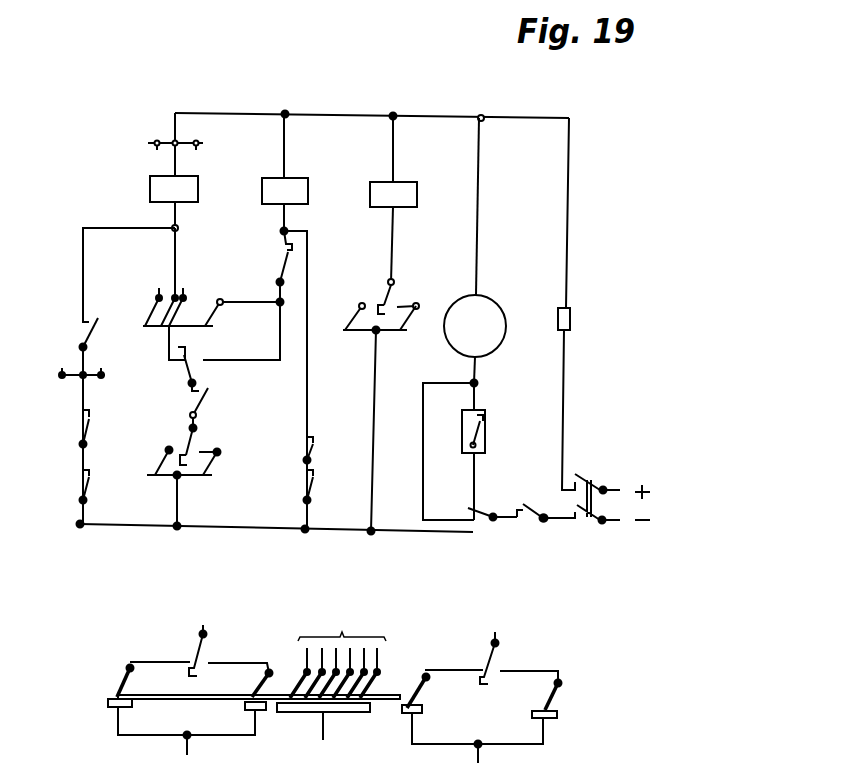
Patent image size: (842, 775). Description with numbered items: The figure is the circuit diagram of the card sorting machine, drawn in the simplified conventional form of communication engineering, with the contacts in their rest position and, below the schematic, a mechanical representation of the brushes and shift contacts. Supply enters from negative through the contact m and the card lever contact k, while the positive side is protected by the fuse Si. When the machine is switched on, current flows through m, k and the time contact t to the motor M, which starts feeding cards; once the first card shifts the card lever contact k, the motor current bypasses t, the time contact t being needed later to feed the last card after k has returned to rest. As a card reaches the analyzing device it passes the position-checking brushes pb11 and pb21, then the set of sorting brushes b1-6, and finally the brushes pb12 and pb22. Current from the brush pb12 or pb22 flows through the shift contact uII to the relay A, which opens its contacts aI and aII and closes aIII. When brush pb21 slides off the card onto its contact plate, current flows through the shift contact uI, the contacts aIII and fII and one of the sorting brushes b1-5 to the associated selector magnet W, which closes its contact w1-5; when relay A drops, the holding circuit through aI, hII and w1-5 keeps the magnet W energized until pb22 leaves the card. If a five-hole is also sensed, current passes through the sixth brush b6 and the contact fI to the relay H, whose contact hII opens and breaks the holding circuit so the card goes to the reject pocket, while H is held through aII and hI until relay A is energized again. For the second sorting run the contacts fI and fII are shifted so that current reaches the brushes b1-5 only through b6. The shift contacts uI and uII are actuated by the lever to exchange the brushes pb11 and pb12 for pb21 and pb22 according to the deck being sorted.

The selector magnet W is at (197, 172).
The relay H is at (296, 174).
The relay A is at (404, 199).
The contacts of selector magnets w1-5 is at (108, 338).
The contact of relay H hII is at (96, 433).
The contact of relay H hI is at (318, 455).
The contact of relay A aI is at (93, 491).
The contact of relay A aII is at (318, 492).
The contact of relay A aIII is at (211, 410).
The sorting brushes b1-5 is at (181, 277).
The sixth sorting brush b6 is at (244, 315).
The set of sorting brushes b1-6 is at (331, 670).
The sorting-run contact fI is at (247, 295).
The sorting-run contact fII is at (194, 361).
The shift contact uI is at (349, 556).
The shift contact uII is at (304, 477).
The position-checking brush pb21 is at (333, 605).
The position-checking brush pb11 is at (394, 585).
The position-checking brush pb22 is at (253, 529).
The position-checking brush pb12 is at (319, 508).
The motor M is at (475, 252).
The time contact t is at (462, 451).
The card lever contact k is at (492, 504).
The main contact m is at (546, 504).
The fuse Si is at (577, 304).